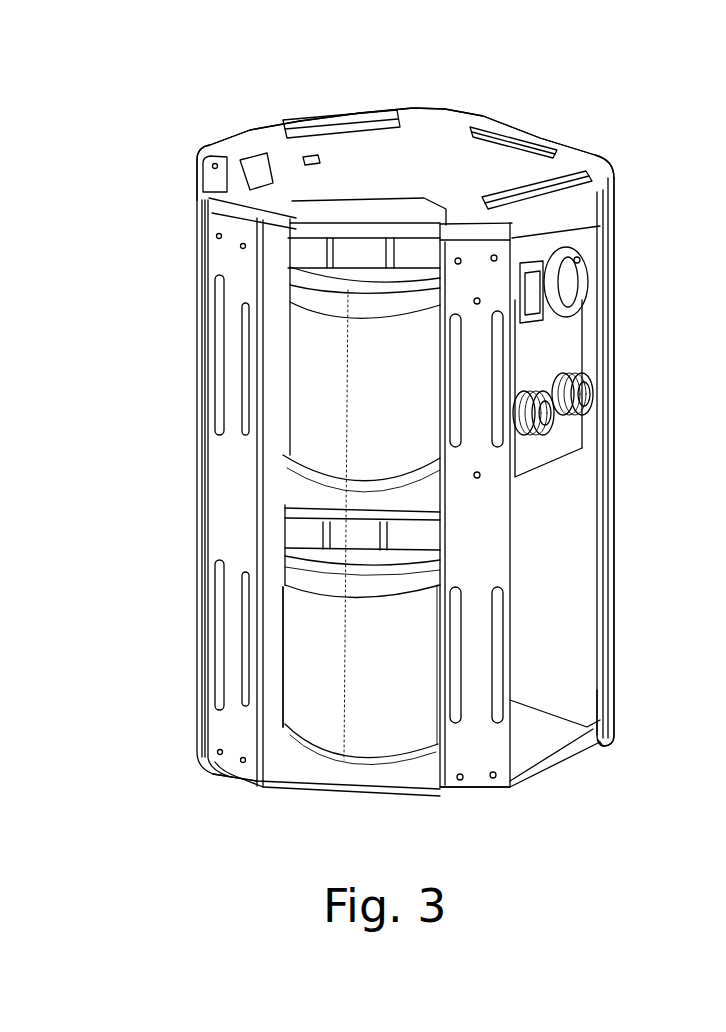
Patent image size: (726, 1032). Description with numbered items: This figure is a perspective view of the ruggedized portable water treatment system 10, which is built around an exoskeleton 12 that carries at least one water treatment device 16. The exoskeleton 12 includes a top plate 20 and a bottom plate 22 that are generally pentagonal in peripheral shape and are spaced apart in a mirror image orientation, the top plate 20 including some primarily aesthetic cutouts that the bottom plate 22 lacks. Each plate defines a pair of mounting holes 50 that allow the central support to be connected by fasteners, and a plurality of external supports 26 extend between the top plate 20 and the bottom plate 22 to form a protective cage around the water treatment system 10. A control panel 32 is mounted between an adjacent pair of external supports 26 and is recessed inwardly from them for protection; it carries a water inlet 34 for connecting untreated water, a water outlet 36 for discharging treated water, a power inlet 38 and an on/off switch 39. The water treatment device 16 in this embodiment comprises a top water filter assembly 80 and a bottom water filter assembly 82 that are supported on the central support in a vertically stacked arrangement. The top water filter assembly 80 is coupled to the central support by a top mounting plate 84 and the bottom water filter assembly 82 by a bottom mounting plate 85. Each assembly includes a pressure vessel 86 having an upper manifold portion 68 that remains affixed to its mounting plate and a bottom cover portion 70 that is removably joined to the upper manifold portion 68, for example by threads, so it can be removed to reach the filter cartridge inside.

The portable water treatment system 10 is at (586, 122).
The exoskeleton 12 is at (440, 113).
The water treatment device 16 is at (285, 462).
The top plate 20 is at (343, 140).
The bottom plate 22 is at (397, 783).
The external supports 26 is at (203, 207).
The control panel 32 is at (597, 333).
The water inlet 34 is at (556, 438).
The water outlet 36 is at (596, 391).
The power inlet 38 is at (590, 268).
The on/off switch 39 is at (520, 310).
The mounting holes 50 is at (303, 162).
The upper manifold portion 68 is at (313, 295).
The bottom cover portion 70 is at (332, 423).
The top water filter assembly 80 is at (287, 368).
The bottom water filter assembly 82 is at (283, 670).
The top mounting plate 84 is at (383, 237).
The bottom mounting plate 85 is at (372, 503).
The pressure vessel 86 is at (287, 397).